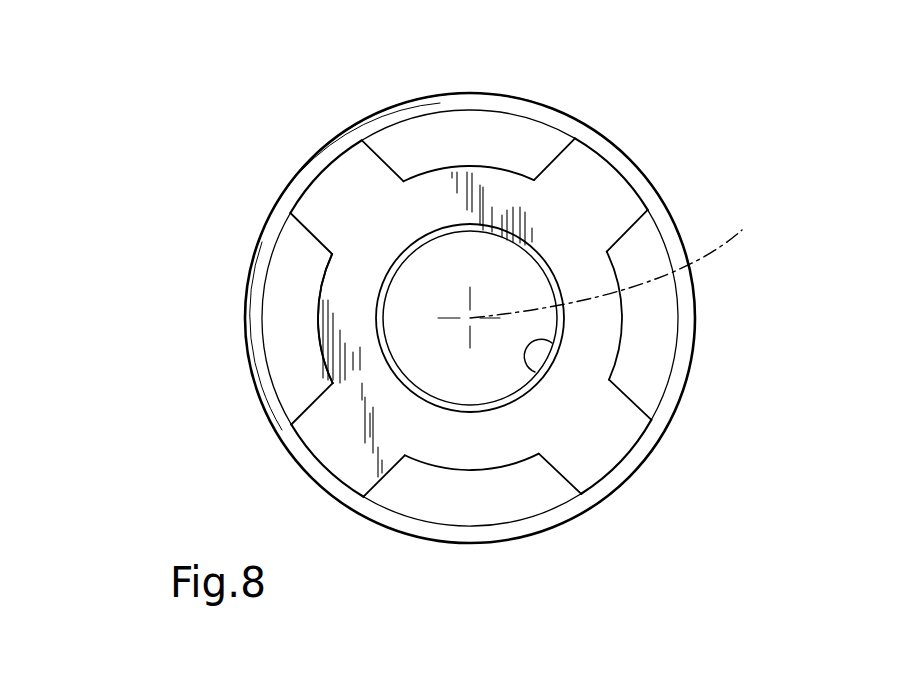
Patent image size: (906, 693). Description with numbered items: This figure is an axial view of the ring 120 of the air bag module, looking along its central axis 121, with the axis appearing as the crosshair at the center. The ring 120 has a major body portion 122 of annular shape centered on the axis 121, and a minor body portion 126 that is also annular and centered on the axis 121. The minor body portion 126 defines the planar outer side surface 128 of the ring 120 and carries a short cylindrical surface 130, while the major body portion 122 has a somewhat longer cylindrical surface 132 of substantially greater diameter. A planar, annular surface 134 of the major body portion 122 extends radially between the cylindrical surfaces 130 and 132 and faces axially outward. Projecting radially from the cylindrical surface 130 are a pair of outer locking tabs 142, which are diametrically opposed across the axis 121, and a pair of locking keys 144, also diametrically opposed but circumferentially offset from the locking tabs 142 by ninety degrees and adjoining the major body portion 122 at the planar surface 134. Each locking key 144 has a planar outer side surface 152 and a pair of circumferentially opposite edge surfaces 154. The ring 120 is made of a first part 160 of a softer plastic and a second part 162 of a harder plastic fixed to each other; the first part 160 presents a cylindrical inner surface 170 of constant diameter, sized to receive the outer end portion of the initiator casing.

The ring 120 is at (202, 104).
The central axis 121 is at (626, 260).
The major body portion 122 is at (283, 293).
The minor body portion 126 is at (338, 320).
The planar outer side surface 128 is at (443, 445).
The cylindrical surface 130 is at (477, 470).
The cylindrical surface 132 is at (303, 352).
The planar annular surface 134 is at (293, 372).
The outer locking tabs 142 is at (613, 162).
The locking keys 144 is at (318, 200).
The planar outer side surface 152 is at (322, 205).
The edge surfaces 154 is at (383, 160).
The first part 160 is at (445, 214).
The second part 162 is at (507, 86).
The cylindrical inner surface 170 is at (553, 343).